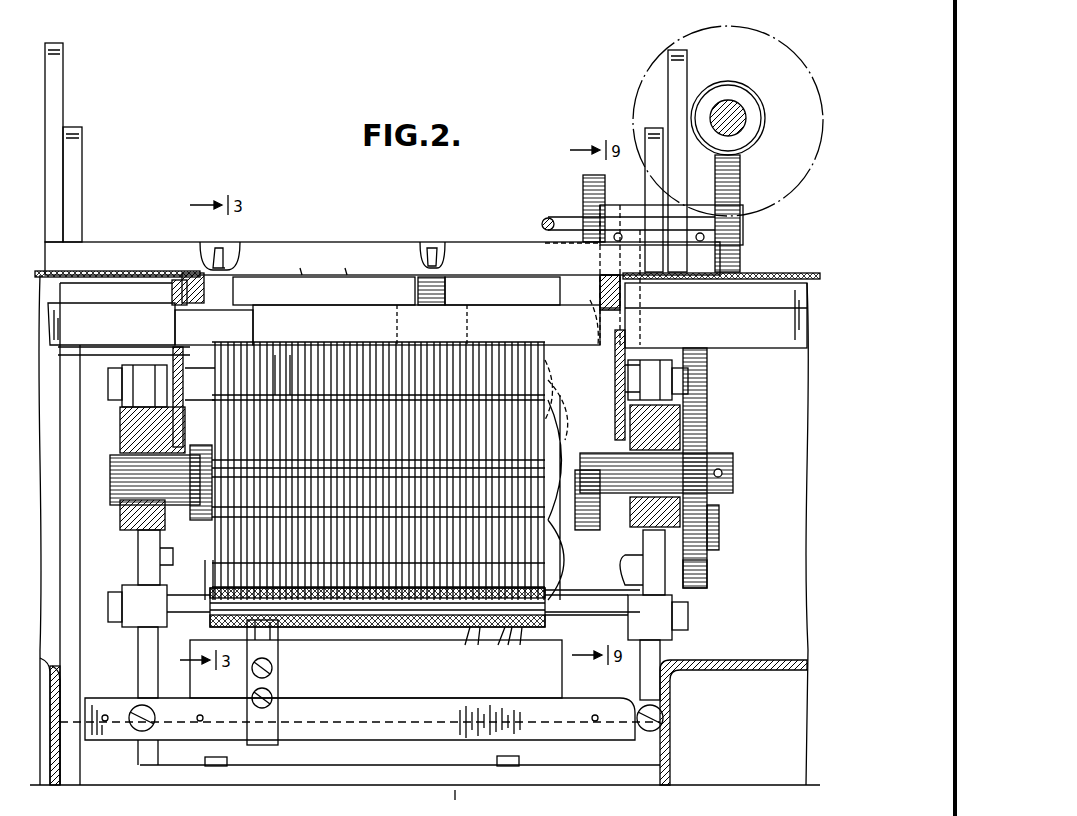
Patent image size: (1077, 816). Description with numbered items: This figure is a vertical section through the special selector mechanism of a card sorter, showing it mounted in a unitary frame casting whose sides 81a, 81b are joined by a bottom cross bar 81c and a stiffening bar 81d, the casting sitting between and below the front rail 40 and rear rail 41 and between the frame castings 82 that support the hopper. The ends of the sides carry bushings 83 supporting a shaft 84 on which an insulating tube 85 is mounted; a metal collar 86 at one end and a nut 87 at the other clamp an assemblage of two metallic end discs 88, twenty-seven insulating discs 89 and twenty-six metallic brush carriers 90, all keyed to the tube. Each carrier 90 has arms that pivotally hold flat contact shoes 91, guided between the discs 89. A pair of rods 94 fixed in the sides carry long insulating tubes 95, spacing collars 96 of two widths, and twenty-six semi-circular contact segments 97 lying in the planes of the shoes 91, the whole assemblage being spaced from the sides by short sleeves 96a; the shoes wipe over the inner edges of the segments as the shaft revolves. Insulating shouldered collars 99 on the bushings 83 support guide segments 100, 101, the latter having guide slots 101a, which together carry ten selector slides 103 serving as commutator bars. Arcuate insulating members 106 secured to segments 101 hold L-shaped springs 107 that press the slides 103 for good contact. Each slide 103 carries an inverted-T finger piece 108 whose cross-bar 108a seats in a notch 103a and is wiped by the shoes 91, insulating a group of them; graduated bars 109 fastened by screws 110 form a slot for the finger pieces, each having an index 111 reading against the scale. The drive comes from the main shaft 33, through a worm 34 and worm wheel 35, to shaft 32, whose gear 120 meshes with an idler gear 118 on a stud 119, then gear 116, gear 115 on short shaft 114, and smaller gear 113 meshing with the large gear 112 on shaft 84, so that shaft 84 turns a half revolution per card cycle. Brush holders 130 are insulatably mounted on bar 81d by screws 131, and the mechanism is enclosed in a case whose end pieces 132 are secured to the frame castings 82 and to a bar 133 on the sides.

The shaft 32 is at (560, 228).
The main shaft 33 is at (746, 118).
The worm 34 is at (726, 81).
The worm wheel 35 is at (740, 180).
The front rail 40 is at (62, 114).
The rear rail 41 is at (668, 88).
The side of frame casting 81a is at (140, 672).
The side of frame casting 81b is at (640, 668).
The bottom cross bar 81c is at (393, 772).
The stiffening bar 81d is at (440, 700).
The frame casting 82 is at (66, 585).
The bushing 83 is at (118, 440).
The shaft 84 is at (130, 485).
The tube 85 is at (556, 520).
The metal collar 86 is at (200, 522).
The nut 87 is at (600, 525).
The metallic end disc 88 is at (175, 560).
The disc of insulating material 89 is at (300, 365).
The brush carrier 90 is at (320, 400).
The brush or contact shoe 91 is at (290, 350).
The rod 94 is at (360, 627).
The long tube 95 is at (408, 627).
The spacing collar 96 is at (200, 625).
The short sleeve 96a is at (160, 628).
The contact segment 97 is at (210, 578).
The shouldered collar 99 is at (140, 522).
The guide segment 100 is at (185, 355).
The guide segment 101 is at (170, 355).
The guide slot 101a is at (455, 803).
The selector slide 103 is at (88, 300).
The notch or recess 103a is at (462, 305).
The arcuate member 106 is at (203, 265).
The L-shaped spring 107 is at (180, 312).
The finger piece 108 is at (243, 262).
The cross-bar 108a is at (298, 262).
The graduated bar 109 is at (346, 263).
The screw 110 is at (183, 278).
The index 111 is at (430, 250).
The large gear 112 is at (707, 578).
The gear 113 is at (719, 545).
The short shaft 114 is at (715, 425).
The gear 115 is at (612, 535).
The gear 116 is at (548, 380).
The idler gear 118 is at (590, 300).
The stud 119 is at (545, 360).
The gear 120 is at (583, 195).
The brush holder 130 is at (278, 648).
The screw 131 is at (280, 688).
The end piece 132 is at (772, 276).
The bar 133 is at (540, 715).